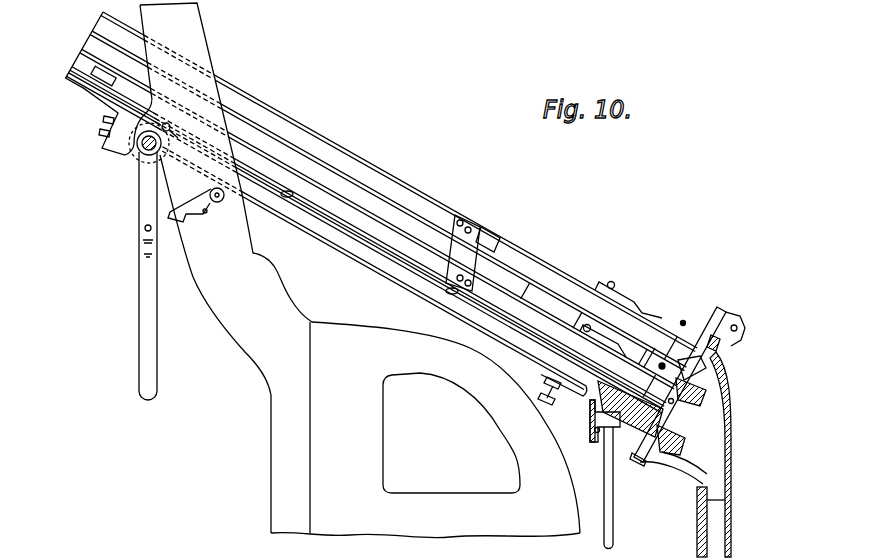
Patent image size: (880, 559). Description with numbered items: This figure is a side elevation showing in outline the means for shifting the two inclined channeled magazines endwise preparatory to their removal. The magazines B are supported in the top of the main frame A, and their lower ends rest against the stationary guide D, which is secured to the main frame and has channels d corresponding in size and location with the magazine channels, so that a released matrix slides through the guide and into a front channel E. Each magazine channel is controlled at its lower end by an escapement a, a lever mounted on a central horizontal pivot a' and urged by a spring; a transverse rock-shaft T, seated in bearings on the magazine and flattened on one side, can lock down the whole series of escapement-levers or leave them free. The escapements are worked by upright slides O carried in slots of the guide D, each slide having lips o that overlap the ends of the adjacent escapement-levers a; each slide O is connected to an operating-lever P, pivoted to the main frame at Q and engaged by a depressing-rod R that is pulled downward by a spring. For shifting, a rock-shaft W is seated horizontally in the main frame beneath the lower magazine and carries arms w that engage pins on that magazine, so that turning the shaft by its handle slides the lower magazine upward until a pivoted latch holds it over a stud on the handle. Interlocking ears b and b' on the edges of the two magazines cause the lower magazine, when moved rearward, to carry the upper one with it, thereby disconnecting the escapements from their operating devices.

The main frame A is at (363, 270).
The magazine B is at (340, 158).
The ear b is at (476, 234).
The ear b' is at (499, 232).
The escapement a is at (665, 333).
The pivot a' is at (678, 373).
The rock-shaft T is at (664, 364).
The escapement-operating slide O is at (722, 323).
The guide D is at (732, 409).
The front channel E is at (697, 538).
The operating-lever P is at (590, 416).
The pivot Q is at (594, 431).
The depressing-rod R is at (604, 495).
The rock-shaft W is at (137, 148).
The arm w is at (173, 134).
The section c' is at (652, 398).
The channel d is at (684, 405).
The lip o is at (672, 403).